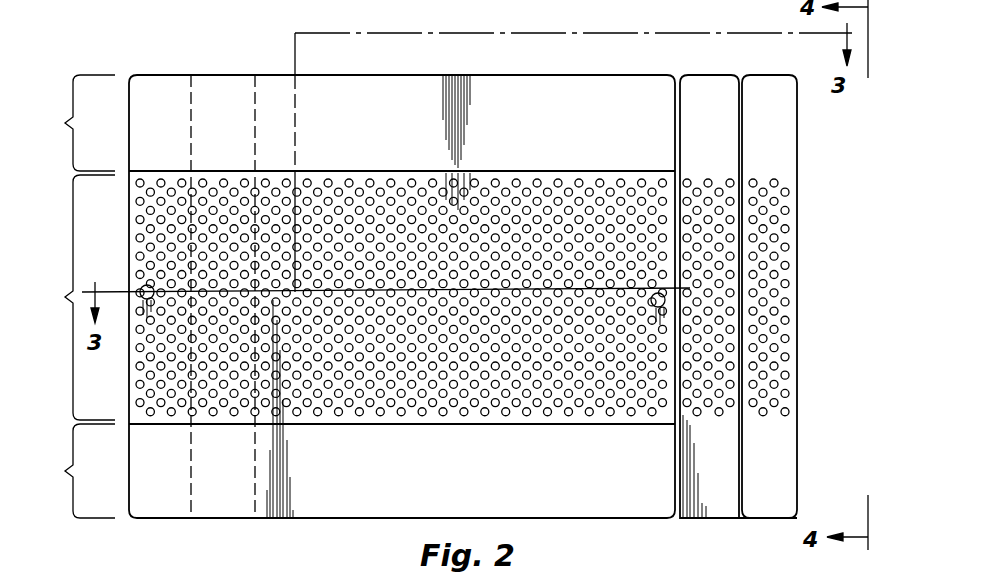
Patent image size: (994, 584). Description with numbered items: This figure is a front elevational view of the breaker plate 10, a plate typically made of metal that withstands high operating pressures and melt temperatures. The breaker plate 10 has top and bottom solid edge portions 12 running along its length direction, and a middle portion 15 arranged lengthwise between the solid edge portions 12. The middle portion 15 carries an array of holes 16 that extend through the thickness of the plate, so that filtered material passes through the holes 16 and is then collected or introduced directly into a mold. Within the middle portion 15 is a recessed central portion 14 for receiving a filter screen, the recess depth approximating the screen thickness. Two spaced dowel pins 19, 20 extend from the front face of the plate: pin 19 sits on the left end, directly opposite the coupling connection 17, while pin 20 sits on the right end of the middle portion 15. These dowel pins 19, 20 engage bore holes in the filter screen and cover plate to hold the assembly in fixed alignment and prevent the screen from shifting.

The breaker plate 10 is at (175, 41).
The top and bottom solid edge portions 12 is at (75, 296).
The recessed central portion 14 is at (625, 416).
The middle portion 15 is at (75, 297).
The holes 16 is at (371, 180).
The coupling connection 17 is at (197, 582).
The dowel pin 19 is at (141, 287).
The dowel pin 20 is at (664, 295).